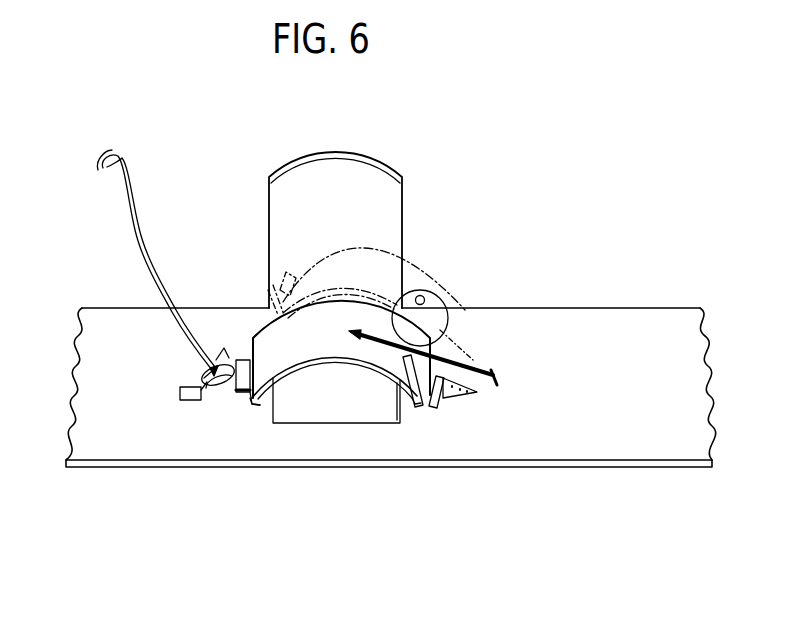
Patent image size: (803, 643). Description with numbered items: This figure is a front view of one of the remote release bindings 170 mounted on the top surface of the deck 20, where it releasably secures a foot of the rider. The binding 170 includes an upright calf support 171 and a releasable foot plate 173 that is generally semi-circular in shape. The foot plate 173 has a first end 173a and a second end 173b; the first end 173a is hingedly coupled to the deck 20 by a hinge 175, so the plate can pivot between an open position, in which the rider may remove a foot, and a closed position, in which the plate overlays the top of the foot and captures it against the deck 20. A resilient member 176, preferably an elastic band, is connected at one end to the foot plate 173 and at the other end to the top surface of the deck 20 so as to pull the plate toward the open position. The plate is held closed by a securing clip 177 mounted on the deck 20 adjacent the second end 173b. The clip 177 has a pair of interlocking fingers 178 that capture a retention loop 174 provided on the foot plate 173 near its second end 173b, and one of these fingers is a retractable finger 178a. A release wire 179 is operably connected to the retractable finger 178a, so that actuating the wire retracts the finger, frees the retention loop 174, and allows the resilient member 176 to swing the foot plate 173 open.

The deck 20 is at (324, 478).
The remote release binding 170 is at (500, 150).
The calf support 171 is at (350, 170).
The releasable foot plate 173 is at (313, 345).
The first end 173a is at (417, 408).
The second end 173b is at (262, 408).
The retention loop 174 is at (238, 358).
The hinge 175 is at (457, 399).
The resilient member 176 is at (417, 322).
The securing clip 177 is at (180, 391).
The interlocking fingers 178 is at (222, 394).
The retractable finger 178a is at (215, 357).
The release wire 179 is at (120, 178).